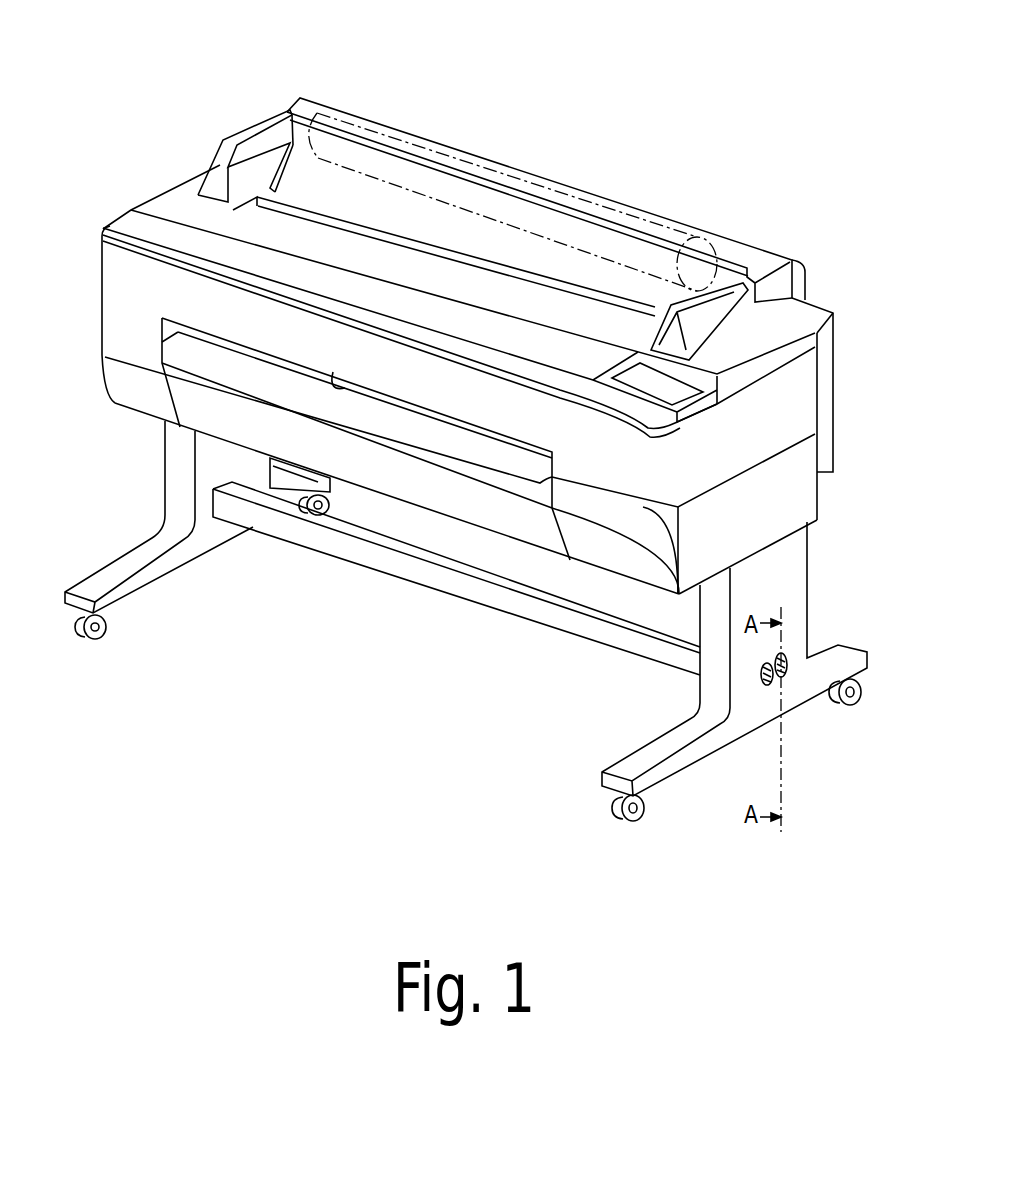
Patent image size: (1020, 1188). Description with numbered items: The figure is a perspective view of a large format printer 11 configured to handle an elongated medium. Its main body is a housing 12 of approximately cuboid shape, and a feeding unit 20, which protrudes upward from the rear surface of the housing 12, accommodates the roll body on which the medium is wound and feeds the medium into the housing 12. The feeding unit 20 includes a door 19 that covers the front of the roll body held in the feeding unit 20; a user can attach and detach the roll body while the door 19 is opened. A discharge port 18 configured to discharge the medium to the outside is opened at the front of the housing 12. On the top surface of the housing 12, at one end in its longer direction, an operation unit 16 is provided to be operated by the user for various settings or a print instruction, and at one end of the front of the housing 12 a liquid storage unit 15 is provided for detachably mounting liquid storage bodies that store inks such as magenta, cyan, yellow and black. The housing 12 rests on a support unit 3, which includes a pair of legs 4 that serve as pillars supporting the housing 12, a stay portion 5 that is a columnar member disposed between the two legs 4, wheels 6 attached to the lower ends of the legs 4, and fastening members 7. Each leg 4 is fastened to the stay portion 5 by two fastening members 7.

The printer 11 is at (758, 133).
The housing 12 is at (130, 210).
The feeding unit 20 is at (312, 104).
The door 19 is at (290, 117).
The operation unit 16 is at (672, 394).
The discharge port 18 is at (334, 370).
The liquid storage unit 15 is at (618, 562).
The support unit 3 is at (797, 566).
The legs 4 is at (797, 600).
The stay portion 5 is at (640, 646).
The wheel 6 is at (629, 822).
The fastening member 7 is at (770, 684).